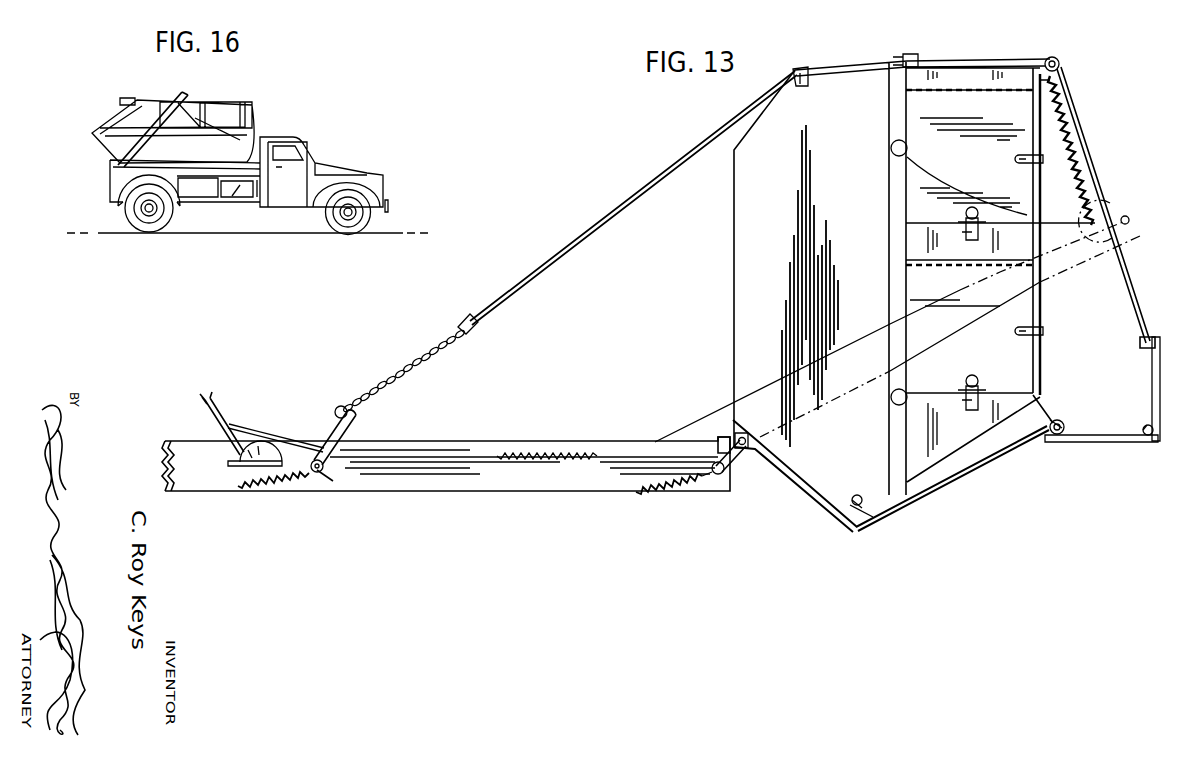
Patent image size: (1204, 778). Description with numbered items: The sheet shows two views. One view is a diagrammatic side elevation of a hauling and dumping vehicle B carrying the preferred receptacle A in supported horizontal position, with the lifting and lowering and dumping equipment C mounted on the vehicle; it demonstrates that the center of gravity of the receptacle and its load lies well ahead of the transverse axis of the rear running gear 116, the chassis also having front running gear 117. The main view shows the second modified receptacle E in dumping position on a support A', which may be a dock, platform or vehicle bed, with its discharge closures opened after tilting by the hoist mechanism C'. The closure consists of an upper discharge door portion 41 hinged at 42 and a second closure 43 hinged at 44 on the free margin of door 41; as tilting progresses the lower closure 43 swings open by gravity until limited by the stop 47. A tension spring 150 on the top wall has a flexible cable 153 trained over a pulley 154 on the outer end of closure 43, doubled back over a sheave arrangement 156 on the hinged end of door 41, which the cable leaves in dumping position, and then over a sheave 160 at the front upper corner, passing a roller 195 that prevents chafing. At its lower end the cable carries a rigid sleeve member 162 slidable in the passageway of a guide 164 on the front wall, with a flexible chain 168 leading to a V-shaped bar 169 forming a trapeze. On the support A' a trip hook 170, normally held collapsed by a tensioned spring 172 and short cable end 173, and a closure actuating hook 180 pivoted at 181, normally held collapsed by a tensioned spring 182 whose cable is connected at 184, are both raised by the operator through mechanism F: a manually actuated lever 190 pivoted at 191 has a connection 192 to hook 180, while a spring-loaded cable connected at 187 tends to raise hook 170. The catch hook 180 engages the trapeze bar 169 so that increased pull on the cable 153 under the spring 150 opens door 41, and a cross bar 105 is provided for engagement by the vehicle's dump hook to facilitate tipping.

In FIG. 16, the rear running gear 116 is at (145, 228).
In FIG. 16, the front running gear 117 is at (344, 232).
In FIG. 16, the receptacle A is at (243, 122).
In FIG. 16, the transporting and dumping vehicle B is at (242, 190).
In FIG. 16, the lifting and lowering and dumping equipment C is at (173, 118).
In FIG. 13, the receptacle E is at (752, 236).
In FIG. 13, the mechanism F is at (368, 428).
In FIG. 13, the support A' is at (446, 476).
In FIG. 13, the hoist mechanism C' is at (897, 321).
In FIG. 13, the guide 164 is at (907, 60).
In FIG. 13, the sheave or pulley 160 is at (1065, 48).
In FIG. 13, the roller 195 is at (808, 88).
In FIG. 13, the tension spring 150 is at (1082, 205).
In FIG. 13, the flexible cable 153 is at (545, 263).
In FIG. 13, the pulley or sheave 154 is at (1142, 350).
In FIG. 13, the pulley or sheave arrangement 156 is at (1060, 428).
In FIG. 13, the sleeve member 162 is at (474, 328).
In FIG. 13, the flexible chain 168 is at (418, 366).
In FIG. 13, the V-shaped bar 169 is at (338, 406).
In FIG. 13, the trip hook 170 is at (735, 464).
In FIG. 13, the tensioned spring 172 is at (656, 495).
In FIG. 13, the short flexible cable end 173 is at (694, 484).
In FIG. 13, the closure actuating hook 180 is at (350, 438).
In FIG. 13, the pivot 181 is at (305, 461).
In FIG. 13, the tensioned spring 182 is at (284, 488).
In FIG. 13, the connection 184 is at (335, 466).
In FIG. 13, the connection 187 is at (720, 440).
In FIG. 13, the manually actuated lever 190 is at (223, 415).
In FIG. 13, the pivot 191 is at (243, 463).
In FIG. 13, the cable or other connection 192 is at (262, 430).
In FIG. 13, the cross bar 105 is at (752, 432).
In FIG. 13, the upper discharge door portion 41 is at (1100, 442).
In FIG. 13, the hinge 42 is at (1047, 440).
In FIG. 13, the second closure 43 is at (1160, 390).
In FIG. 13, the hinge 44 is at (1152, 440).
In FIG. 13, the stop 47 is at (1145, 430).